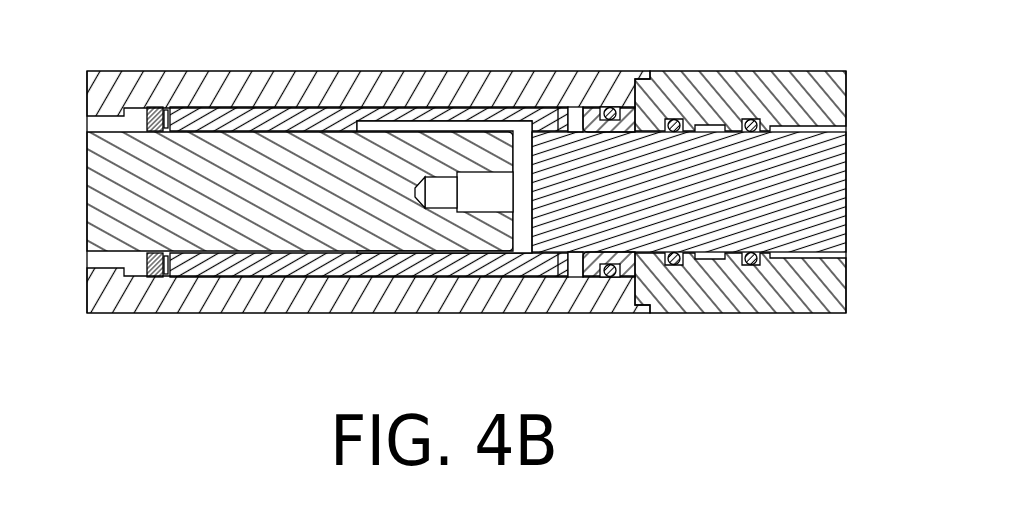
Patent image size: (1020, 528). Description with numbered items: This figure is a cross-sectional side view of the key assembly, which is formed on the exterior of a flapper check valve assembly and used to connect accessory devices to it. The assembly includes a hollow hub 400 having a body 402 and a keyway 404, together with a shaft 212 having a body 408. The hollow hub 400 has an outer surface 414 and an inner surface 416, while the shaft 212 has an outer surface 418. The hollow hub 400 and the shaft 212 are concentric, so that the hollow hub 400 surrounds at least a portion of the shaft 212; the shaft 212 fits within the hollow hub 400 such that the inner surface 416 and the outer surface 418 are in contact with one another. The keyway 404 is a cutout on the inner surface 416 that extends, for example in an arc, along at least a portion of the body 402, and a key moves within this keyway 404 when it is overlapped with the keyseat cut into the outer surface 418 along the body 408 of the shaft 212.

The shaft 212 is at (135, 195).
The hollow hub 400 is at (556, 134).
The body 402 is at (817, 218).
The keyway 404 is at (425, 125).
The body 408 is at (220, 198).
The outer surface 414 is at (495, 278).
The inner surface 416 is at (437, 223).
The outer surface 418 is at (384, 247).